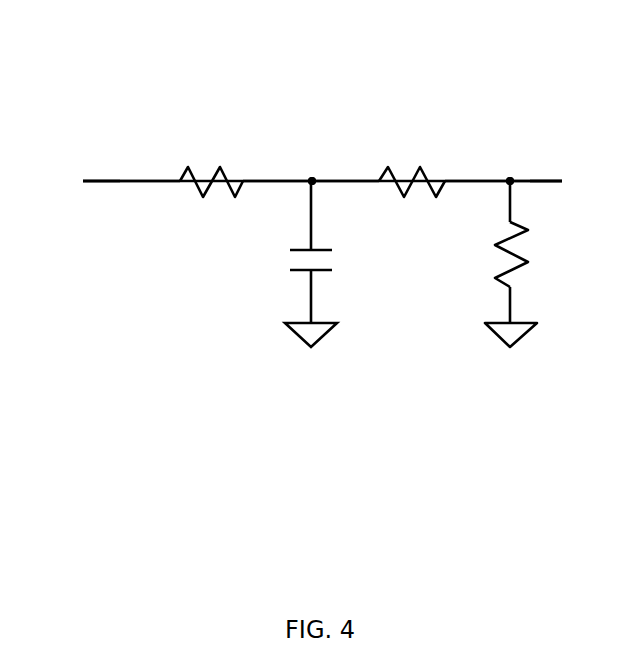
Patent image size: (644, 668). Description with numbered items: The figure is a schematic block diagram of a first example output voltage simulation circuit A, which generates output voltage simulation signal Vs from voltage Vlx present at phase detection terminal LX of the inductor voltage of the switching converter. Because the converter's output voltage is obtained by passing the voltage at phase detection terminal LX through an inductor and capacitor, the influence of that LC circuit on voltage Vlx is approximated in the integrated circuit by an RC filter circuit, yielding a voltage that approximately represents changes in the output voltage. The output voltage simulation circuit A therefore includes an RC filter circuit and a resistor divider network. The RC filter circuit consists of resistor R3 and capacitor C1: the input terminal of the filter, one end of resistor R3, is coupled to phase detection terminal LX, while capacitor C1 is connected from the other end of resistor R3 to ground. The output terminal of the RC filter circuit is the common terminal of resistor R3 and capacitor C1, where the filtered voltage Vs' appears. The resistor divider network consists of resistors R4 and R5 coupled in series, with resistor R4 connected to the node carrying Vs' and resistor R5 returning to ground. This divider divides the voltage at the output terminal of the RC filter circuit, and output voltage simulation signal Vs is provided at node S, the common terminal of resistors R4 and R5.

The resistor R3 is at (211, 165).
The resistor R4 is at (412, 161).
The resistor R5 is at (527, 264).
The capacitor C1 is at (330, 264).
The phase detection terminal LX is at (66, 181).
The RC filter circuit output voltage Vs' is at (322, 159).
The common terminal of resistors R4 and R5 S is at (509, 168).
The output voltage simulation signal Vs is at (572, 181).
The output voltage simulation circuit A is at (194, 70).